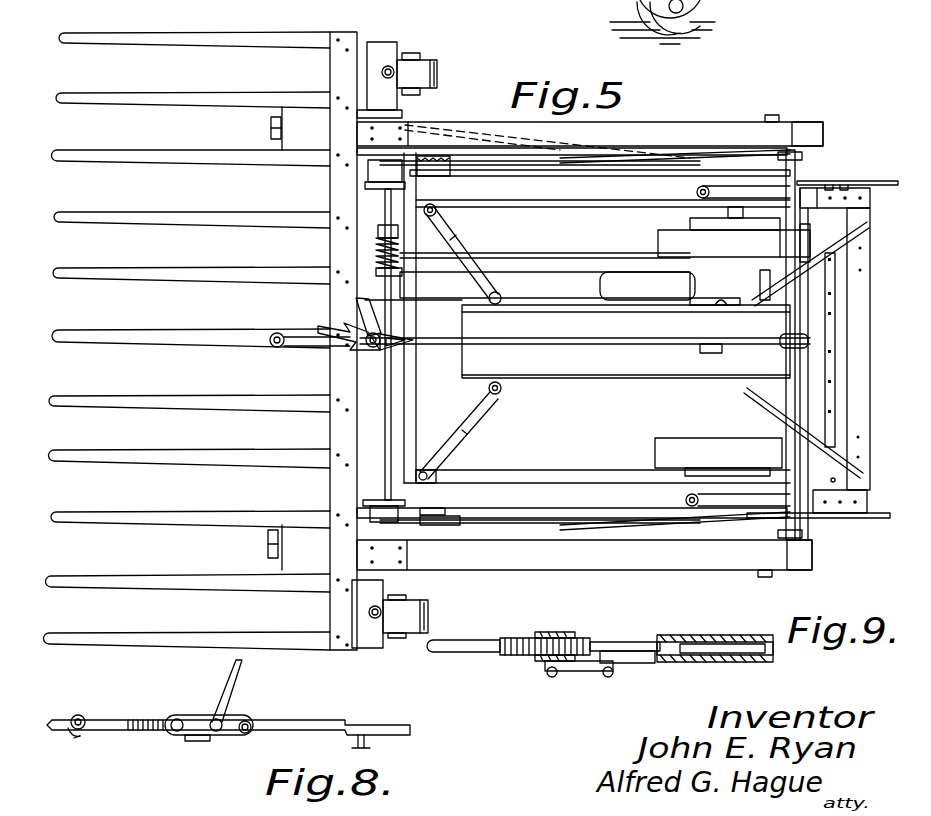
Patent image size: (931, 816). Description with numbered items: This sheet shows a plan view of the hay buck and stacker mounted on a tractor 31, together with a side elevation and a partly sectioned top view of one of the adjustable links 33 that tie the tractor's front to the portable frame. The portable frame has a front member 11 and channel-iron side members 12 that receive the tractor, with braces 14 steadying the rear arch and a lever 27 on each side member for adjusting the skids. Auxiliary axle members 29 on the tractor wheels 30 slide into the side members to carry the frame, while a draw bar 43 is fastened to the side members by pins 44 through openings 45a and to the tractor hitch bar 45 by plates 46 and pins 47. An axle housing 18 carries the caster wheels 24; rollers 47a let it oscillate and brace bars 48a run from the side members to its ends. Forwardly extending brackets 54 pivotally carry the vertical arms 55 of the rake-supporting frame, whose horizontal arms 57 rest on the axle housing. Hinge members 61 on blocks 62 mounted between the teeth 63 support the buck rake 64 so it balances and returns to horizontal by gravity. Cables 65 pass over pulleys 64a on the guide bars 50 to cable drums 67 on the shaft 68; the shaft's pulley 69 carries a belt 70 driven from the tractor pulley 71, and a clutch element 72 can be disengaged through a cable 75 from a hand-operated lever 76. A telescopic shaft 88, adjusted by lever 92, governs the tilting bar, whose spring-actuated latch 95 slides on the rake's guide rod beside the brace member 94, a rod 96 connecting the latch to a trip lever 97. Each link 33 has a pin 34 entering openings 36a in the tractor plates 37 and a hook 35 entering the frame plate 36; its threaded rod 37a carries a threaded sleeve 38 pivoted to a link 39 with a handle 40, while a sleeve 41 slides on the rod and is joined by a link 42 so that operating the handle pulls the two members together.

In FIG. 5, the teeth 63 is at (213, 90).
In FIG. 5, the buck rake 64 is at (345, 66).
In FIG. 5, the hinge members 61 is at (271, 127).
In FIG. 5, the blocks 62 is at (299, 338).
In FIG. 5, the roller 47a is at (356, 160).
In FIG. 5, the caster wheels 24 is at (437, 70).
In FIG. 5, the horizontal arm 57 is at (692, 125).
In FIG. 5, the vertically arranged arms 55 is at (822, 135).
In FIG. 5, the guide bar 50 is at (445, 150).
In FIG. 5, the cables 65 is at (553, 168).
In FIG. 5, the pulleys 64a is at (450, 170).
In FIG. 5, the brace bars 48a is at (605, 168).
In FIG. 5, the forwardly extending brackets 54 is at (770, 160).
In FIG. 5, the lever 27 is at (852, 180).
In FIG. 5, the pins 44 is at (858, 200).
In FIG. 5, the plates 46 is at (868, 255).
In FIG. 5, the tractor hitch bar 45 is at (835, 287).
In FIG. 5, the openings 45a is at (837, 473).
In FIG. 5, the draw bar 43 is at (870, 232).
In FIG. 5, the pins 47 is at (828, 255).
In FIG. 5, the wheels 30 is at (734, 240).
In FIG. 5, the auxiliary axle members 29 is at (685, 214).
In FIG. 5, the front member 11 is at (416, 404).
In FIG. 5, the side members 12 is at (462, 488).
In FIG. 5, the plate 36 is at (437, 210).
In FIG. 8, the plate 36 is at (56, 716).
In FIG. 5, the adjustable links 33 is at (462, 246).
In FIG. 5, the cable 75 is at (510, 250).
In FIG. 5, the plates 37 is at (530, 268).
In FIG. 8, the plates 37 is at (400, 725).
In FIG. 5, the openings 36a is at (503, 392).
In FIG. 5, the belt 70 is at (578, 272).
In FIG. 5, the pulley 71 is at (647, 280).
In FIG. 5, the hand-operated lever 76 is at (761, 285).
In FIG. 5, the tractor 31 is at (626, 341).
In FIG. 5, the rod 96 is at (538, 305).
In FIG. 5, the telescopic shaft 88 is at (577, 343).
In FIG. 5, the lever 92 is at (706, 350).
In FIG. 5, the trip lever 97 is at (715, 312).
In FIG. 5, the braces 14 is at (717, 494).
In FIG. 5, the cable drums 67 is at (385, 189).
In FIG. 5, the shaft 68 is at (384, 418).
In FIG. 5, the pulley 69 is at (365, 282).
In FIG. 5, the axle housing 18 is at (370, 240).
In FIG. 5, the clutch element 72 is at (378, 265).
In FIG. 5, the spring-actuated latch 95 is at (310, 351).
In FIG. 5, the brace member 94 is at (320, 347).
In FIG. 8, the hook 35 is at (73, 741).
In FIG. 8, the threaded sleeve 38 is at (145, 725).
In FIG. 9, the threaded sleeve 38 is at (548, 638).
In FIG. 8, the link 39 is at (190, 735).
In FIG. 9, the link 39 is at (572, 671).
In FIG. 8, the link 42 is at (234, 732).
In FIG. 9, the link 42 is at (640, 663).
In FIG. 8, the handle 40 is at (242, 672).
In FIG. 8, the pin 34 is at (370, 748).
In FIG. 9, the threaded rod 37a is at (480, 640).
In FIG. 9, the sleeve 41 is at (705, 636).